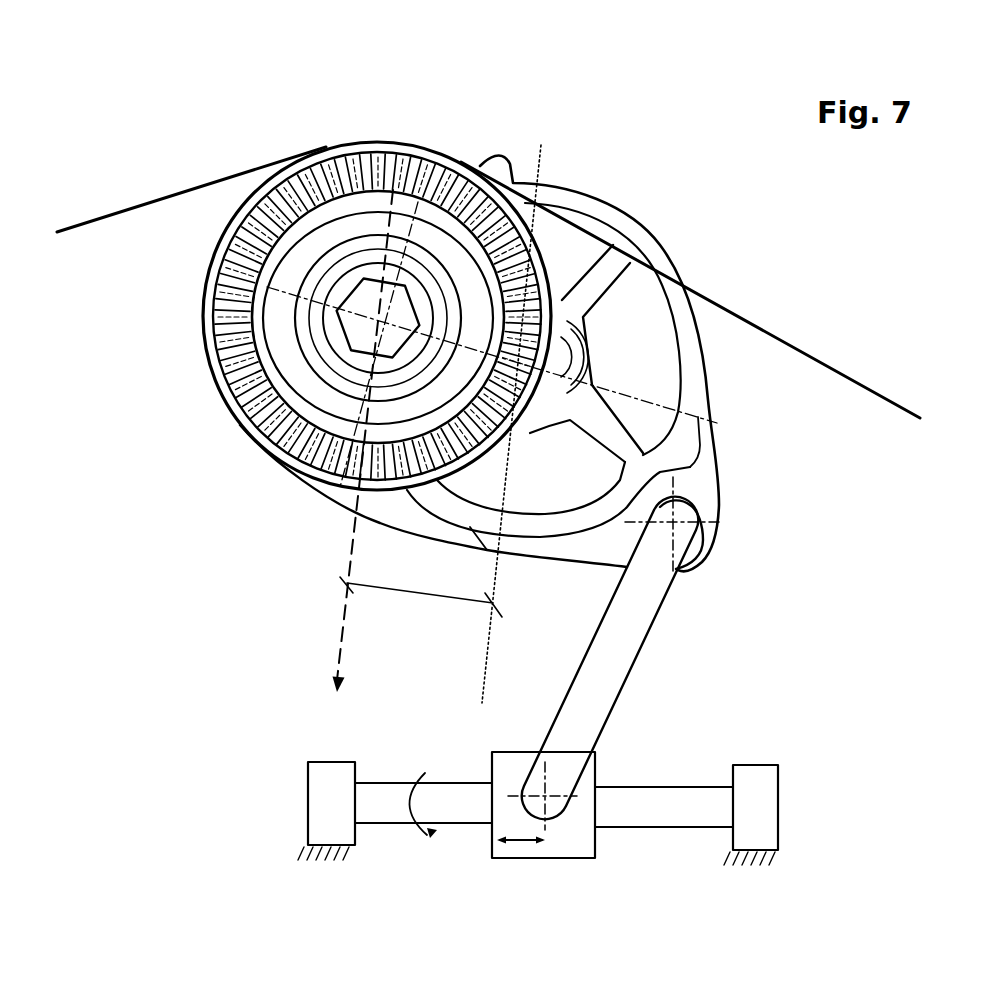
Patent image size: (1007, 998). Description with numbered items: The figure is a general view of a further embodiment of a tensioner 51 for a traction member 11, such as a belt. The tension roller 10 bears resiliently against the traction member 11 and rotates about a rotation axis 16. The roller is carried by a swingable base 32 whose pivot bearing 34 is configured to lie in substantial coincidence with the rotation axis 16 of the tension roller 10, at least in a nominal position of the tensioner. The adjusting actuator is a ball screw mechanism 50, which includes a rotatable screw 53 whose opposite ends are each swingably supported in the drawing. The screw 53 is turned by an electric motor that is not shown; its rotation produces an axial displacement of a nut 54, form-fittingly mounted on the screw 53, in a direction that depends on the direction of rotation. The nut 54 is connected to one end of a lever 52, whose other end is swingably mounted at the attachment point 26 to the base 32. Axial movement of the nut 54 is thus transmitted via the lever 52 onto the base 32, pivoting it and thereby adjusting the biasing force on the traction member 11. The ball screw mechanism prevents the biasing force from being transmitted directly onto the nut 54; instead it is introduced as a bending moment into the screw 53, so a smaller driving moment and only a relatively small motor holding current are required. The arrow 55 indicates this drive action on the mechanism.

The tension roller 10 is at (225, 397).
The traction member 11 is at (833, 367).
The rotation axis 16 is at (378, 255).
The pivot bearing 34 is at (378, 318).
The attachment point 26 is at (715, 522).
The base 32 is at (663, 375).
The ball screw mechanism 50 is at (468, 864).
The tensioner 51 is at (625, 193).
The lever 52 is at (615, 652).
The screw 53 is at (679, 815).
The nut 54 is at (573, 837).
The drive direction 55 is at (652, 738).